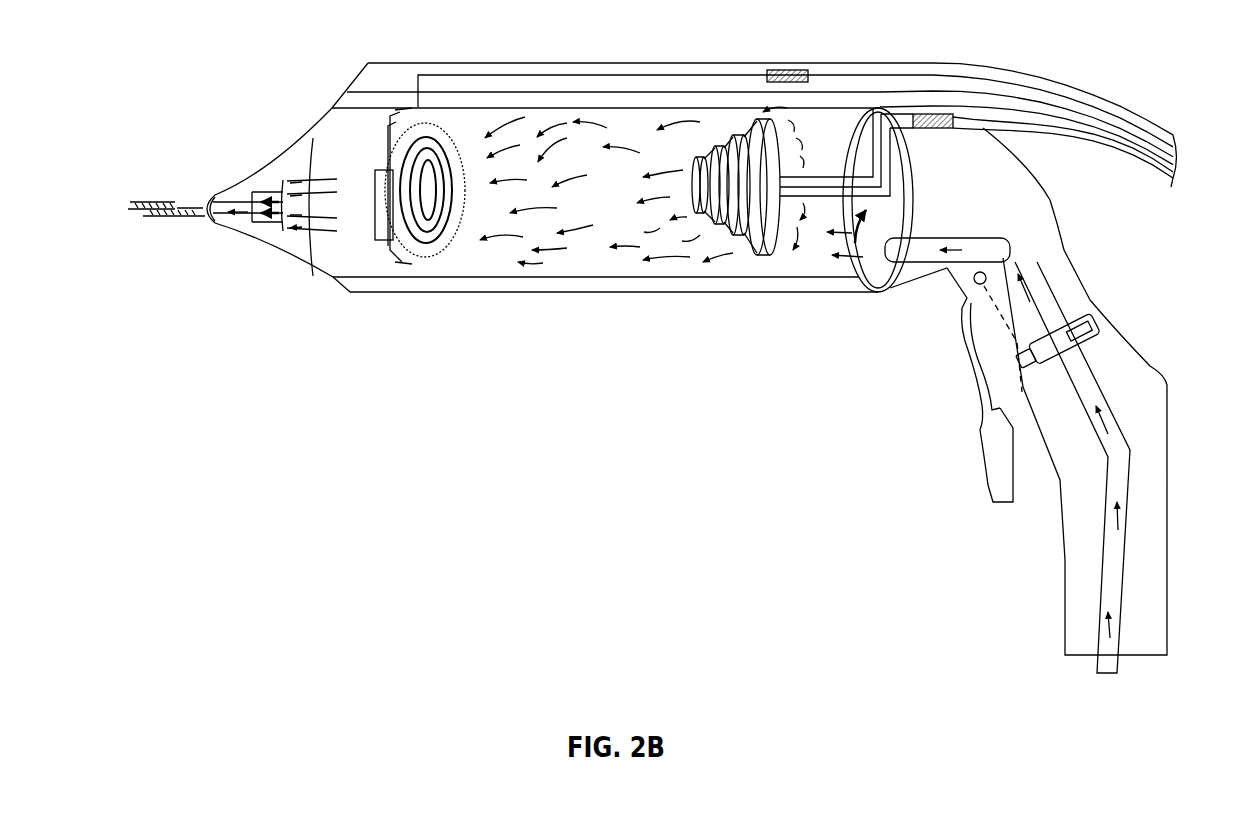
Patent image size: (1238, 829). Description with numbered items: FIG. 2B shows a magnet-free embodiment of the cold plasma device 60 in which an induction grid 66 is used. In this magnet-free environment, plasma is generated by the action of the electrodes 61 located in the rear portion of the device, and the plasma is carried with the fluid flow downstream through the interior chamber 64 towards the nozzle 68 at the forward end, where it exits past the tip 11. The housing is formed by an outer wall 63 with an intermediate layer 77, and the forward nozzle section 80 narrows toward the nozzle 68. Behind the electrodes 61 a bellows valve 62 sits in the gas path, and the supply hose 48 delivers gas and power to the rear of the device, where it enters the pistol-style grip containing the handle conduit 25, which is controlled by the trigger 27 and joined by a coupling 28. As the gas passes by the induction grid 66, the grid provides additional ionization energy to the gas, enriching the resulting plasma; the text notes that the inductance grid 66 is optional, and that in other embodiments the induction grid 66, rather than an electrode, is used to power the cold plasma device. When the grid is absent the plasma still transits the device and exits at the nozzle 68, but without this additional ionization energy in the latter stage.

The optical fiber 11 is at (163, 197).
The nozzle 68 is at (207, 207).
The outer housing wall 63 is at (448, 73).
The insulating layer 77 is at (527, 78).
The cooling chamber 64 is at (653, 187).
The handpiece 60 is at (743, 30).
The supply hose 48 is at (810, 176).
The valve bellows 62 is at (851, 139).
The induction grid 66 is at (428, 257).
The nozzle section 80 is at (483, 306).
The electrodes 61 is at (800, 227).
The trigger 27 is at (998, 454).
The handle conduit 25 is at (1100, 596).
The coupling 28 is at (1082, 358).